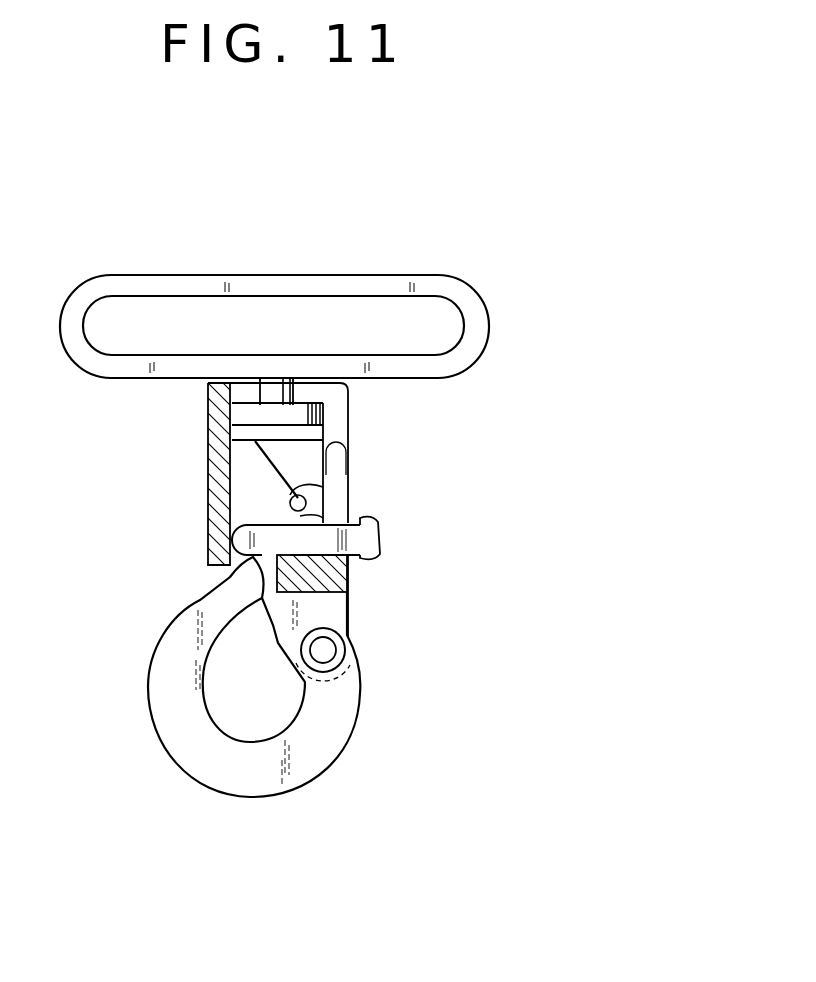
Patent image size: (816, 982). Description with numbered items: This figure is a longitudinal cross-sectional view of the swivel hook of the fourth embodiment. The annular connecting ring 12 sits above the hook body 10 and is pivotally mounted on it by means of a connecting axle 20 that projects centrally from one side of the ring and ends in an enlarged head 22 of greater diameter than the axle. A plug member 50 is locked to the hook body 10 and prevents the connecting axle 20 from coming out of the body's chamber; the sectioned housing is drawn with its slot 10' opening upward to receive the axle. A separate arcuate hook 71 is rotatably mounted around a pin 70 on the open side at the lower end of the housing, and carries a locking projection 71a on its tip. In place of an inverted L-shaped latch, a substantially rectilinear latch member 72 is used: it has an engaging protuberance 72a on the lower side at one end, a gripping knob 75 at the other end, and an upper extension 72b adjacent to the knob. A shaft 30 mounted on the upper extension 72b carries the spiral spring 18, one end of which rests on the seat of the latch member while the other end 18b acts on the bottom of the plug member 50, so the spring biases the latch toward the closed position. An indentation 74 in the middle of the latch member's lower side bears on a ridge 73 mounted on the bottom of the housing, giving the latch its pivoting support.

The connecting ring 12 is at (378, 270).
The hook body 10 is at (207, 493).
The housing slot 10' is at (191, 409).
The connecting axle 20 is at (283, 377).
The enlarged head 22 is at (322, 398).
The plug member 50 is at (335, 432).
The other end of spring 18b is at (208, 453).
The spiral spring 18 is at (300, 470).
The shaft 30 is at (285, 498).
The upper extension 72b is at (333, 488).
The indentation 74 is at (333, 502).
The engaging protuberance 72a is at (240, 543).
The rectilinear latch member 72 is at (355, 537).
The locking projection 71a is at (247, 568).
The gripping knob 75 is at (373, 556).
The ridge 73 is at (212, 588).
The pin 70 is at (323, 650).
The arcuate hook 71 is at (153, 705).